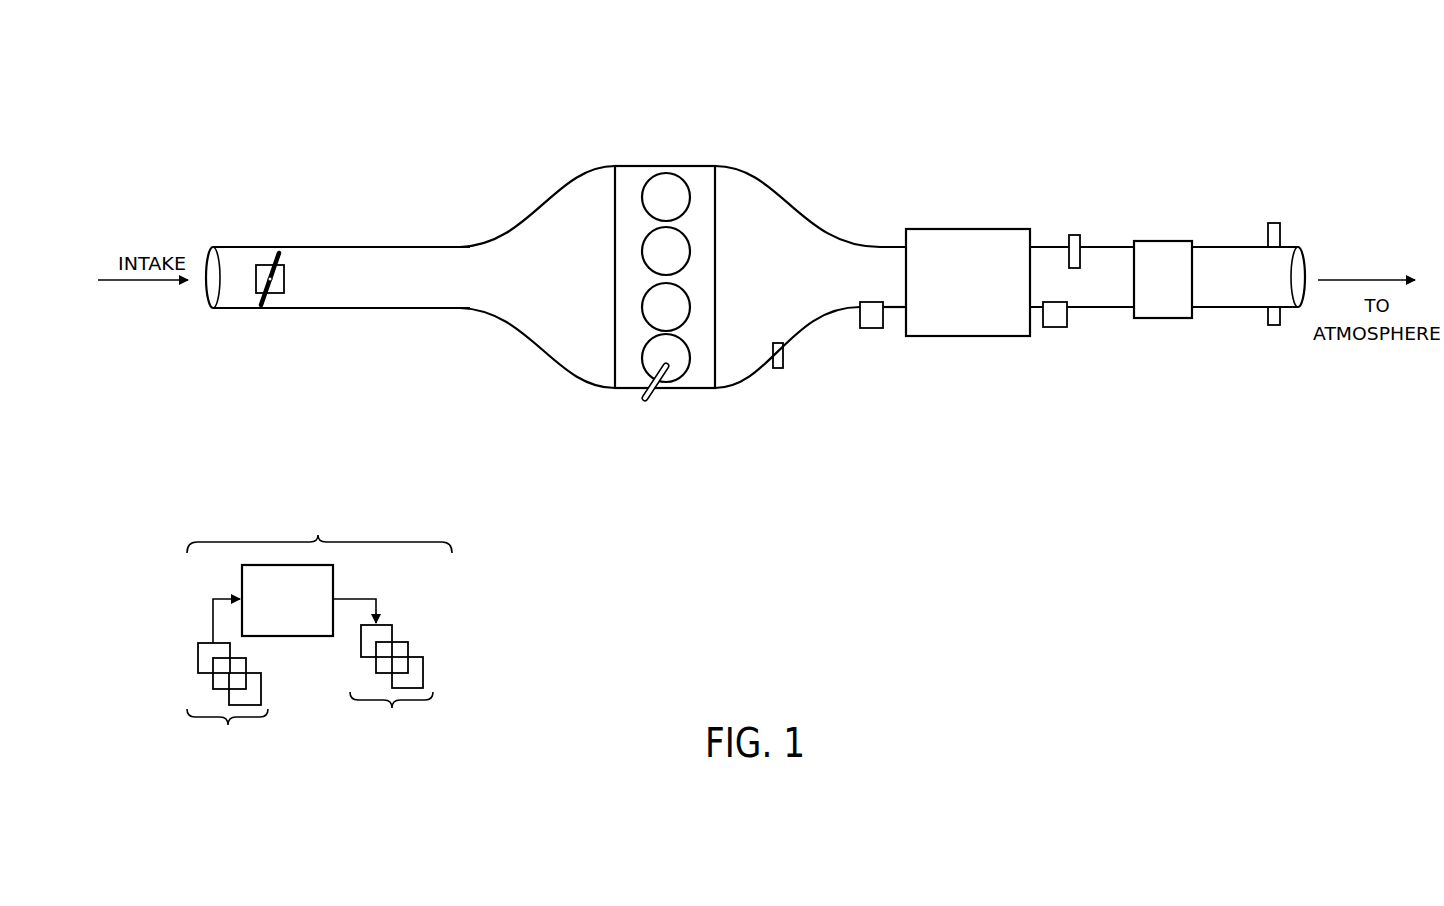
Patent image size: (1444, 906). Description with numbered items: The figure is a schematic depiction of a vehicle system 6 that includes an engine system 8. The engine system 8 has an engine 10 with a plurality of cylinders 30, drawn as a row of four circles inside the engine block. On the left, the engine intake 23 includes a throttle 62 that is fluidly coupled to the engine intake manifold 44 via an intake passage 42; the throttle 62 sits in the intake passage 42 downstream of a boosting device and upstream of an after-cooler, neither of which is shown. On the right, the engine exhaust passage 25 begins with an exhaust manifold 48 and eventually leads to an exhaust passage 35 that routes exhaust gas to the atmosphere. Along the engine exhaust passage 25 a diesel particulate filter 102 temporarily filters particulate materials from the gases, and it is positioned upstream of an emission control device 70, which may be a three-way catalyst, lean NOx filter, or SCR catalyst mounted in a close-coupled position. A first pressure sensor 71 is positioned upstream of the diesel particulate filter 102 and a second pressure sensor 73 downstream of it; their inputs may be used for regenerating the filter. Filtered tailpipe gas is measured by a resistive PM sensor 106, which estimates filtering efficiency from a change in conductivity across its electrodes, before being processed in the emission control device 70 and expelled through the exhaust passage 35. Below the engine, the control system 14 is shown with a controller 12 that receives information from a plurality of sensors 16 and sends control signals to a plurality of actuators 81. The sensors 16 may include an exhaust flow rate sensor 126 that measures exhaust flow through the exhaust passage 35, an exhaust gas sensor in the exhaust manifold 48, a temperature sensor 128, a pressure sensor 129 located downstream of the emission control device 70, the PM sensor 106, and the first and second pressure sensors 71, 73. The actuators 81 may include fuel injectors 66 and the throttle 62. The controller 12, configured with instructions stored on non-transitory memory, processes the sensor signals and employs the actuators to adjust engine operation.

The vehicle system 6 is at (158, 104).
The engine system 8 is at (704, 145).
The engine 10 is at (716, 257).
The controller 12 is at (287, 600).
The control system 14 is at (319, 632).
The sensors 16 is at (227, 686).
The engine intake 23 is at (404, 238).
The engine exhaust passage 25 is at (820, 222).
The cylinders 30 is at (690, 188).
The exhaust passage 35 is at (1235, 247).
The intake passage 42 is at (320, 309).
The engine intake manifold 44 is at (566, 280).
The exhaust manifold 48 is at (786, 280).
The throttle 62 is at (297, 278).
The fuel injectors 66 is at (657, 394).
The emission control device 70 is at (1163, 279).
The first pressure sensor 71 is at (868, 329).
The second pressure sensor 73 is at (1058, 328).
The actuators 81 is at (383, 679).
The diesel particulate filter 102 is at (968, 282).
The PM sensor 106 is at (1069, 238).
The exhaust flow rate sensor 126 is at (785, 349).
The temperature sensor 128 is at (1268, 315).
The pressure sensor 129 is at (1268, 237).